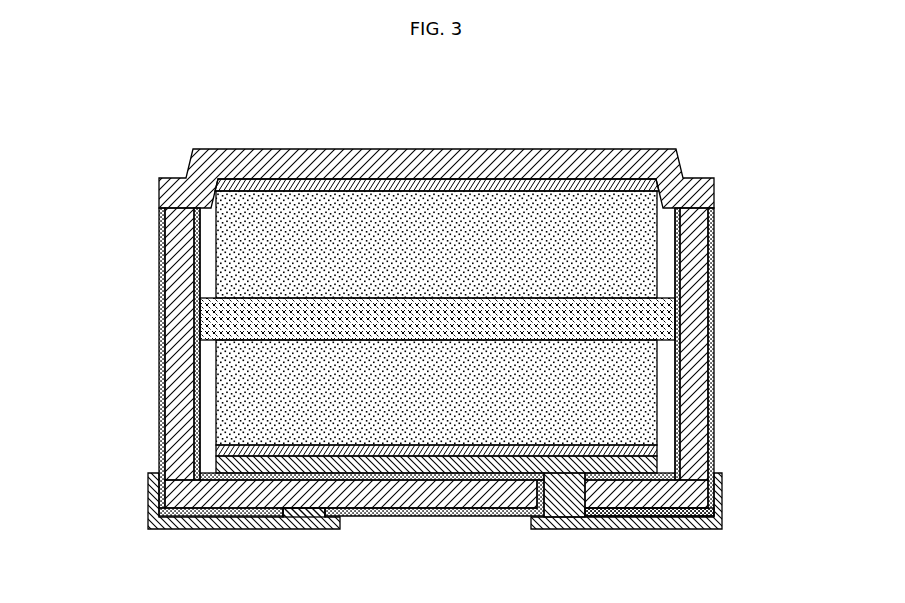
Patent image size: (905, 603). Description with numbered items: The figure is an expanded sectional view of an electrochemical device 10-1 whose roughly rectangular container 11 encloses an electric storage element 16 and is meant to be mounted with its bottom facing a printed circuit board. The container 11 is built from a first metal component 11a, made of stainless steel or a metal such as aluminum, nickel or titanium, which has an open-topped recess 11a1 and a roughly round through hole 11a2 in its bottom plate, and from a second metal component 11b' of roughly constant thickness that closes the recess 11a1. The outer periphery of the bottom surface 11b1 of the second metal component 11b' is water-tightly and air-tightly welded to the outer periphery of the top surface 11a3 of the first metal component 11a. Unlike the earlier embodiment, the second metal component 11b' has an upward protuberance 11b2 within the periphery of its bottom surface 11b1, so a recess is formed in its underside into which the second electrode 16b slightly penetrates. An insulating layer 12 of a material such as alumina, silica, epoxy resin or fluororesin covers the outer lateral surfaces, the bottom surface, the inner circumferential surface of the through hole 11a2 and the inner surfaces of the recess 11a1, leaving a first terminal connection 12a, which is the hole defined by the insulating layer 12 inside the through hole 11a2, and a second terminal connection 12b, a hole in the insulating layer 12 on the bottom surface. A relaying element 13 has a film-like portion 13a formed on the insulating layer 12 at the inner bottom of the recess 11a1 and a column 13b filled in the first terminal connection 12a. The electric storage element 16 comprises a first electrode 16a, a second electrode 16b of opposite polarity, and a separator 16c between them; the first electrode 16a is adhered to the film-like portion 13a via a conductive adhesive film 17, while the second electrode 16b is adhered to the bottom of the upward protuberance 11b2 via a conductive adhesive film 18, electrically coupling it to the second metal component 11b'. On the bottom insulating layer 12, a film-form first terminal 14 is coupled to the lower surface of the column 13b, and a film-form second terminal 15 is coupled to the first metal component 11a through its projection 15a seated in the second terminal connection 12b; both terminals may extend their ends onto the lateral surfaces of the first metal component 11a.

The electrochemical device 10-1 is at (203, 139).
The container 11 is at (68, 180).
The first metal component 11a is at (170, 232).
The recess 11a1 is at (170, 356).
The through hole 11a2 is at (514, 500).
The top surface of the first metal component 11a3 is at (685, 220).
The second metal component 11b' is at (443, 146).
The bottom surface of the second metal component 11b1 is at (688, 198).
The upward protuberance 11b2 is at (312, 141).
The insulating layer 12 is at (188, 276).
The first terminal connection 12a is at (578, 508).
The second terminal connection 12b is at (267, 508).
The relaying element 13 is at (354, 460).
The film-like portion 13a is at (446, 474).
The column 13b is at (553, 510).
The first terminal 14 is at (668, 522).
The second terminal 15 is at (185, 521).
The projection 15a is at (296, 508).
The electric storage element 16 is at (787, 235).
The first electrode 16a is at (623, 393).
The second electrode 16b is at (620, 242).
The separator 16c is at (623, 312).
The conductive adhesive film 17 is at (401, 469).
The conductive adhesive film 18 is at (421, 175).